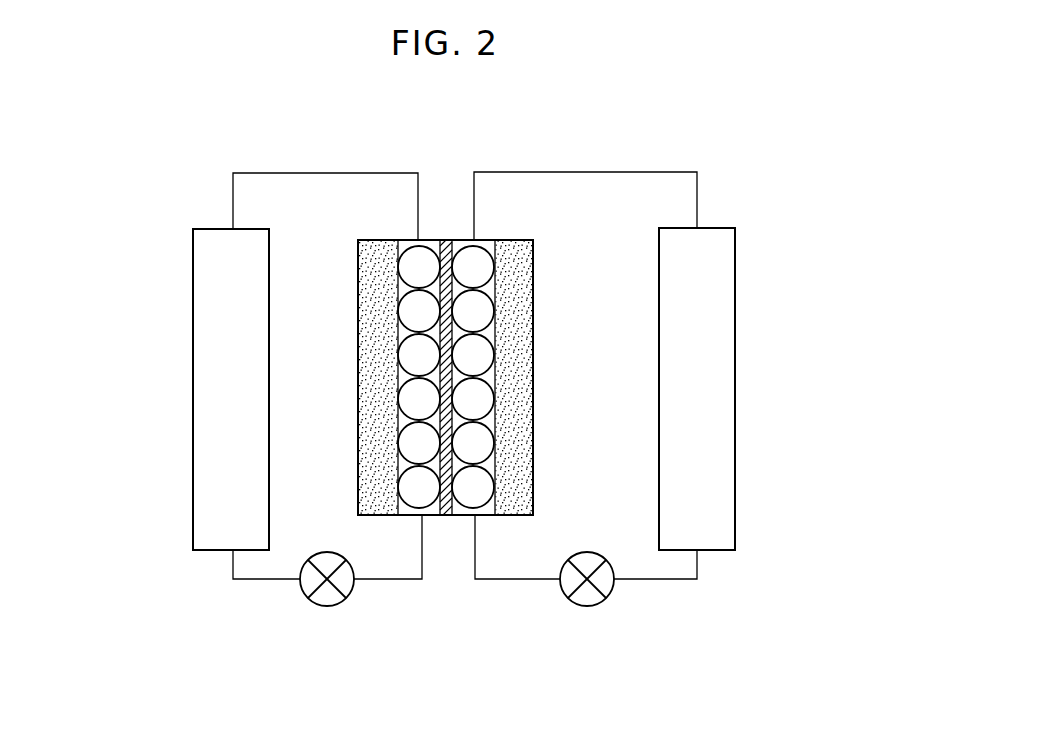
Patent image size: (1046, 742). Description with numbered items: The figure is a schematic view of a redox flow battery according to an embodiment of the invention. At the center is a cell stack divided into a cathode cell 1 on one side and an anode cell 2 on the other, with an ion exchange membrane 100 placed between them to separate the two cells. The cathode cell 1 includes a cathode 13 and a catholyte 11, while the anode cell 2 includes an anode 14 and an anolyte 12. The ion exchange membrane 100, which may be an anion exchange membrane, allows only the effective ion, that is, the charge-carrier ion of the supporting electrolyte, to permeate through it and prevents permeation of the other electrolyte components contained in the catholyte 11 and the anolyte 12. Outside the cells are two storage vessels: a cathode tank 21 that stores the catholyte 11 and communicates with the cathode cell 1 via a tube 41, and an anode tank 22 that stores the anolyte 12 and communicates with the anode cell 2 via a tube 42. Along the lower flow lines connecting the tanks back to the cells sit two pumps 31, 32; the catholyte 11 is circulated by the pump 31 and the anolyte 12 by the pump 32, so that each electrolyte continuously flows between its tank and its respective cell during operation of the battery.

The ion exchange membrane 100 is at (447, 240).
The cathode cell 1 is at (364, 370).
The anode cell 2 is at (526, 370).
The catholyte 11 is at (413, 515).
The anolyte 12 is at (481, 515).
The cathode 13 is at (380, 466).
The anode 14 is at (512, 466).
The cathode tank 21 is at (197, 293).
The anode tank 22 is at (730, 293).
The pump 31 is at (327, 606).
The pump 32 is at (587, 606).
The tube 41 is at (330, 173).
The tube 42 is at (584, 172).